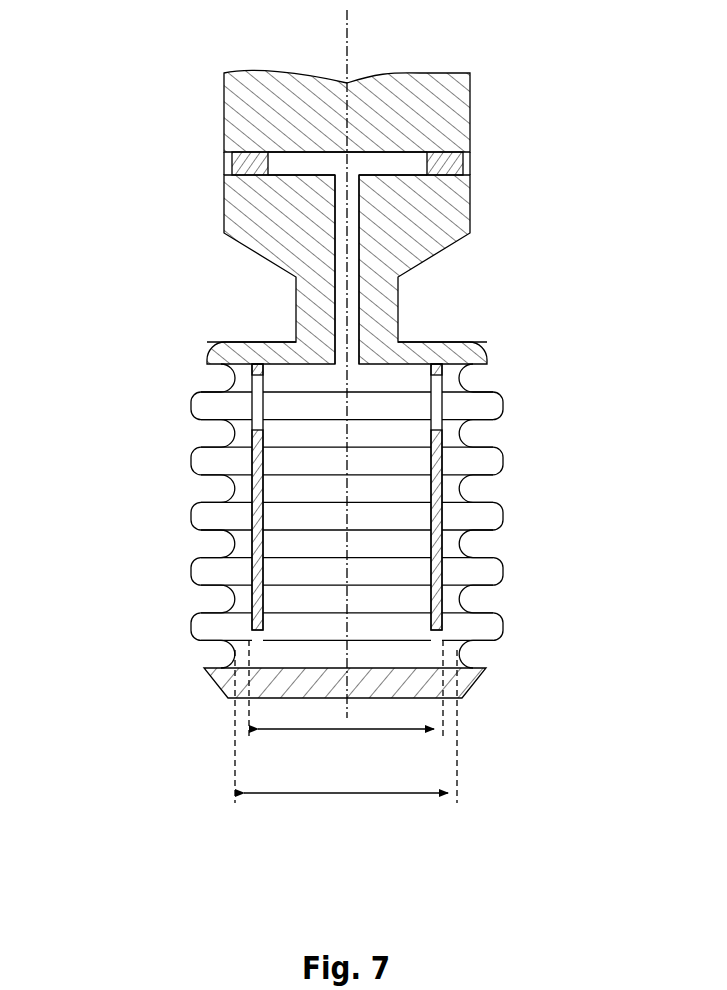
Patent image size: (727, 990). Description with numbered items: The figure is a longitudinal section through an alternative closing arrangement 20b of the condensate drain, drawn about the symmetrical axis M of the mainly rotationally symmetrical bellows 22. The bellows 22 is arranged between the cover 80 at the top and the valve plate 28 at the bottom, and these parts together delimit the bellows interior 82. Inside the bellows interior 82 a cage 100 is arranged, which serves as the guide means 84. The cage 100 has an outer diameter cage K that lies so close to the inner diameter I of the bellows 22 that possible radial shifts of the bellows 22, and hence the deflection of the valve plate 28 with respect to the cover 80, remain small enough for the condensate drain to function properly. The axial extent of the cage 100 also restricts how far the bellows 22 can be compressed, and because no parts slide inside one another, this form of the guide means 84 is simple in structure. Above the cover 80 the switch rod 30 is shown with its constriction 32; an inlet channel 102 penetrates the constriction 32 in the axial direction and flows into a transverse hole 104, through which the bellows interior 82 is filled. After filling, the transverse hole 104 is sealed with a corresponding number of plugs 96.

The closing arrangement 20b is at (160, 243).
The symmetrical axis M is at (345, 48).
The switch rod 30 is at (246, 131).
The transverse hole 104 is at (397, 163).
The plugs 96 is at (450, 160).
The constriction 32 is at (310, 313).
The cover 80 is at (227, 352).
The inlet channel 102 is at (352, 302).
The bellows 22 is at (192, 515).
The cage 100 is at (455, 490).
The bellows interior 82 is at (347, 516).
The guide means 84 is at (457, 460).
The valve plate 28 is at (465, 683).
The outer diameter cage K is at (346, 699).
The inner diameter I is at (346, 735).